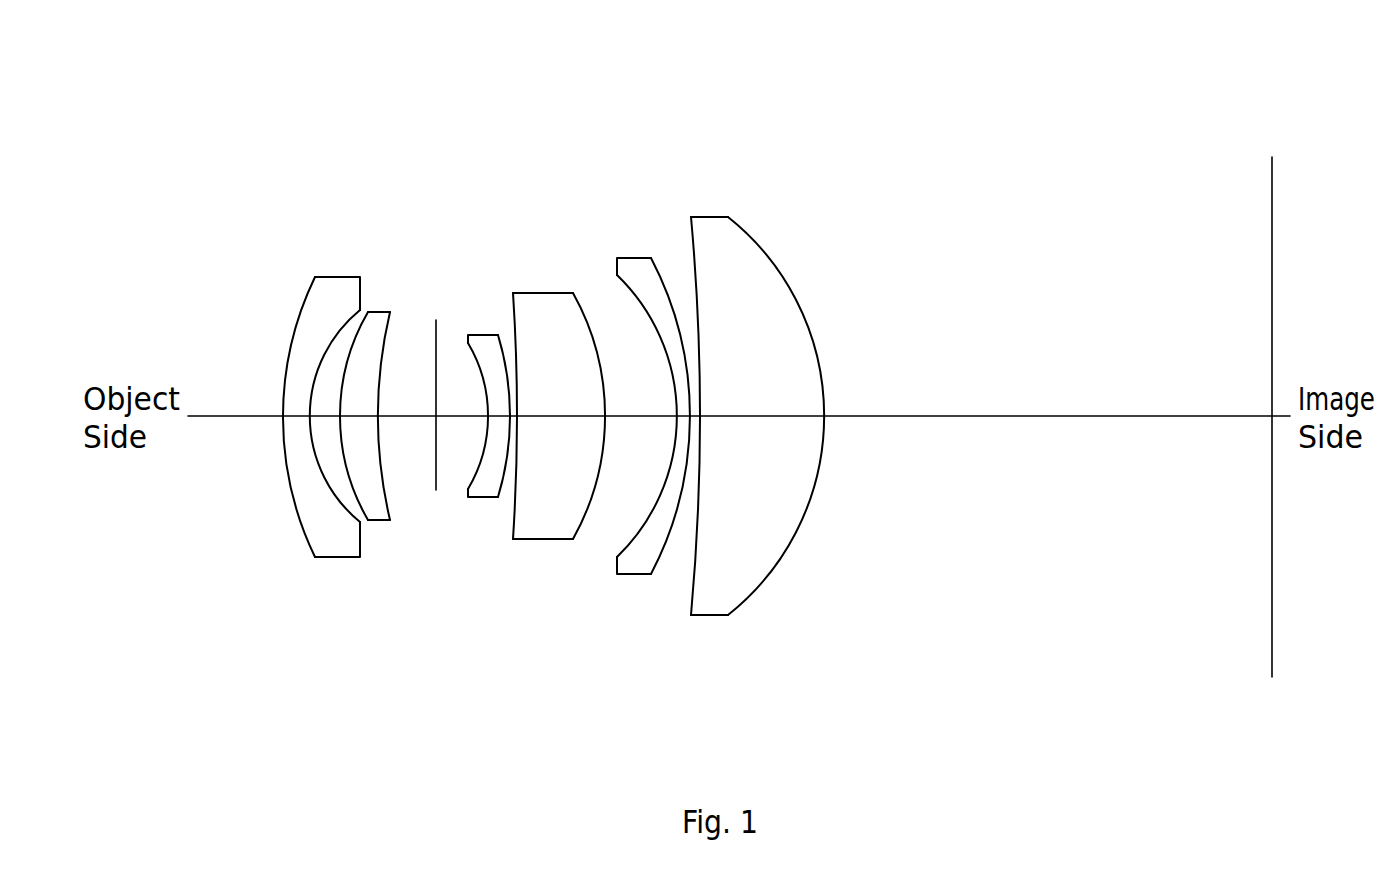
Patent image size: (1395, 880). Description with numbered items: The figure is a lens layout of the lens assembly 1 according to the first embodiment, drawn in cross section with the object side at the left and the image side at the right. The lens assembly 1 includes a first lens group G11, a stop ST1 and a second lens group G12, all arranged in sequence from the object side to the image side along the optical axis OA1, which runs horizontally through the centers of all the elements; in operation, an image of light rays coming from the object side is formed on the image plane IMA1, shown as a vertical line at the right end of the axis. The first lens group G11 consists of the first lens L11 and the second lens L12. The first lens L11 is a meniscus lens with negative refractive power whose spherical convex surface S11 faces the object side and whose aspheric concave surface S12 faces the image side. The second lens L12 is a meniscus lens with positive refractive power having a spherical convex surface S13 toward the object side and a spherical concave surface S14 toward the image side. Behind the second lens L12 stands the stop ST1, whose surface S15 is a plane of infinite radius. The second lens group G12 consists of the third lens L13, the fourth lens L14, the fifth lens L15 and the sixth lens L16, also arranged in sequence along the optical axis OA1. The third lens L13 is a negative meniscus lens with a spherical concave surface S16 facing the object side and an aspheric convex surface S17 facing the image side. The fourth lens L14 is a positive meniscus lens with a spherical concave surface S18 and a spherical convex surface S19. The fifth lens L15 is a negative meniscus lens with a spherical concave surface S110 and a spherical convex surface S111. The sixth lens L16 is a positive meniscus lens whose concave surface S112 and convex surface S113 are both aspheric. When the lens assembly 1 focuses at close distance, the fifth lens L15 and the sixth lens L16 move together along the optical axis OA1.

The lens assembly 1 is at (197, 49).
The first lens group G11 is at (387, 135).
The second lens group G12 is at (737, 133).
The first lens L11 is at (295, 418).
The second lens L12 is at (392, 414).
The third lens L13 is at (488, 401).
The fourth lens L14 is at (558, 423).
The fifth lens L15 is at (660, 425).
The sixth lens L16 is at (772, 439).
The stop ST1 is at (428, 329).
The optical axis OA1 is at (254, 417).
The image plane IMA1 is at (1272, 157).
The convex surface S11 is at (298, 522).
The concave surface S12 is at (345, 518).
The convex surface S13 is at (370, 505).
The concave surface S14 is at (393, 500).
The stop surface S15 is at (436, 490).
The concave surface S16 is at (478, 478).
The convex surface S17 is at (503, 483).
The concave surface S18 is at (512, 477).
The convex surface S19 is at (592, 510).
The concave surface S110 is at (637, 543).
The convex surface S111 is at (662, 560).
The concave surface S112 is at (697, 560).
The convex surface S113 is at (760, 588).